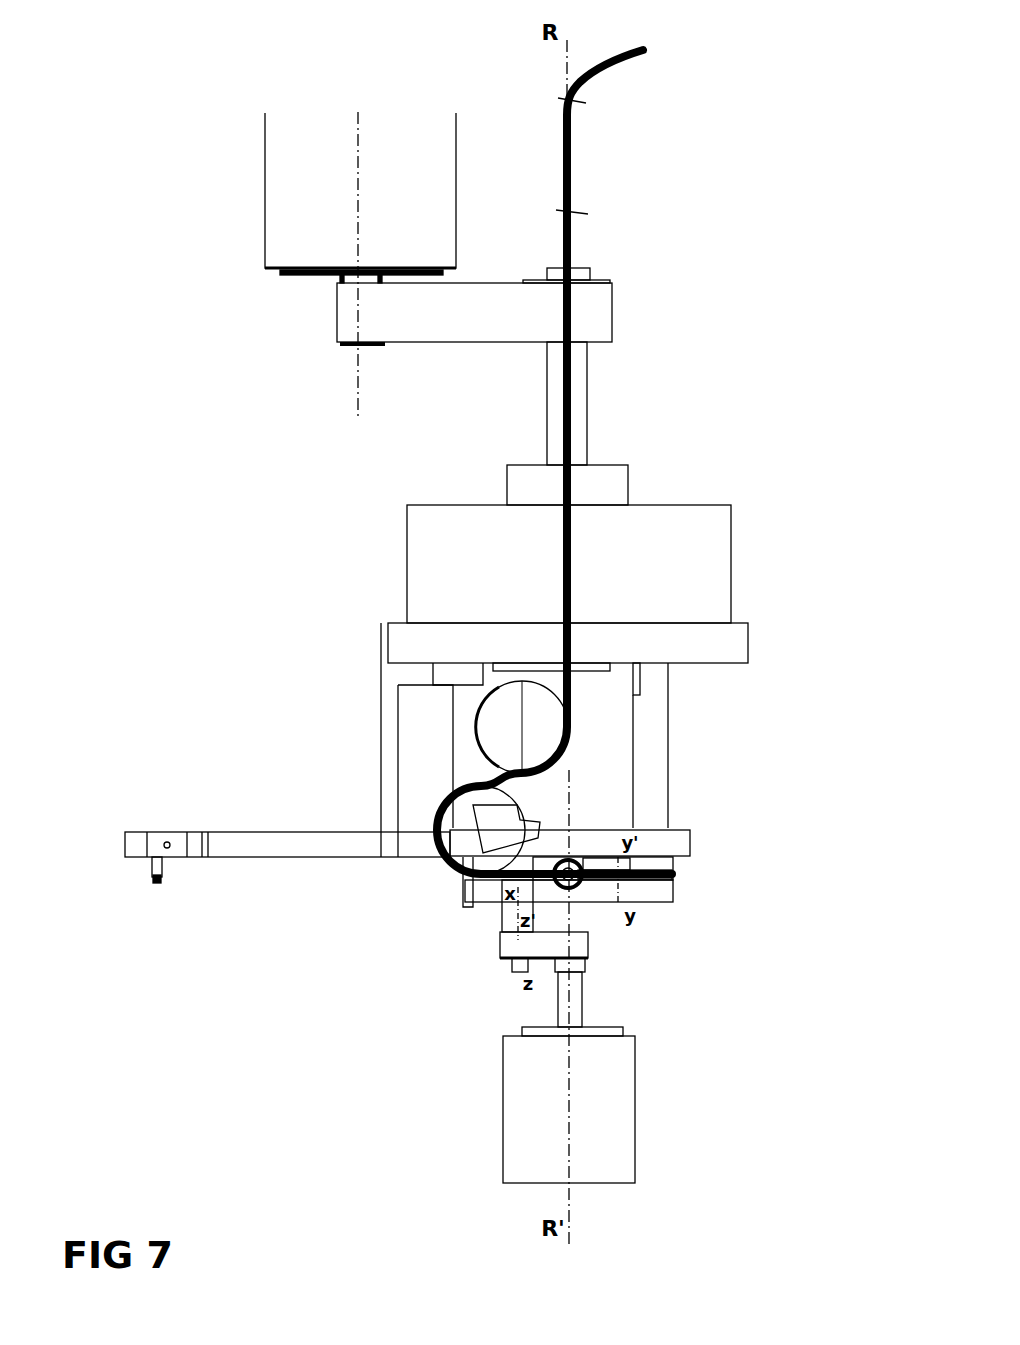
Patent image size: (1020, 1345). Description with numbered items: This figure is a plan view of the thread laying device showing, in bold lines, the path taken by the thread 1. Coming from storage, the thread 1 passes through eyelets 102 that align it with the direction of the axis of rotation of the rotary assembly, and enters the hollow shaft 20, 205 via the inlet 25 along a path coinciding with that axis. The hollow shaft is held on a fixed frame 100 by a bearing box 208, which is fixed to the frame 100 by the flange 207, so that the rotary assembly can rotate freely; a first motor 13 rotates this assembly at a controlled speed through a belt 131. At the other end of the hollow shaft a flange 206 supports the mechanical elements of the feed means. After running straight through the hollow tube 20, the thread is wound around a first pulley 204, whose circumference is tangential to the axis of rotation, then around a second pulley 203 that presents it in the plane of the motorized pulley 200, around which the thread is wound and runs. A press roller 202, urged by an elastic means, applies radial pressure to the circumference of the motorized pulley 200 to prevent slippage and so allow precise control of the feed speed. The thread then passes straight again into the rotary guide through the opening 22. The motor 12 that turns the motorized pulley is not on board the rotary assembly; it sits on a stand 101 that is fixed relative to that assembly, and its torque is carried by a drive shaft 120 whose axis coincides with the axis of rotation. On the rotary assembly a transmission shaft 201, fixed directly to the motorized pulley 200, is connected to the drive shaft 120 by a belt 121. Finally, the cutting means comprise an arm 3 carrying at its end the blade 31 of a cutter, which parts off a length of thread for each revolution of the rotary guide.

The thread 1 is at (571, 157).
The arm 3 is at (347, 832).
The motor 12 is at (622, 1088).
The first motor 13 is at (275, 180).
The hollow shaft 20 is at (590, 407).
The opening 22 is at (580, 890).
The inlet 25 is at (582, 268).
The blade 31 is at (163, 872).
The fixed frame 100 is at (667, 715).
The stand 101 is at (522, 1030).
The eyelets 102 is at (570, 100).
The drive shaft 120 is at (582, 967).
The belt 121 is at (547, 958).
The belt 131 is at (484, 330).
The motorized pulley 200 is at (470, 880).
The transmission shaft 201 is at (503, 915).
The press roller 202 is at (660, 880).
The second pulley 203 is at (460, 812).
The first pulley 204 is at (473, 725).
The hollow shaft 205 is at (637, 778).
The flange 206 is at (690, 835).
The flange 207 is at (748, 643).
The bearing box 208 is at (731, 560).